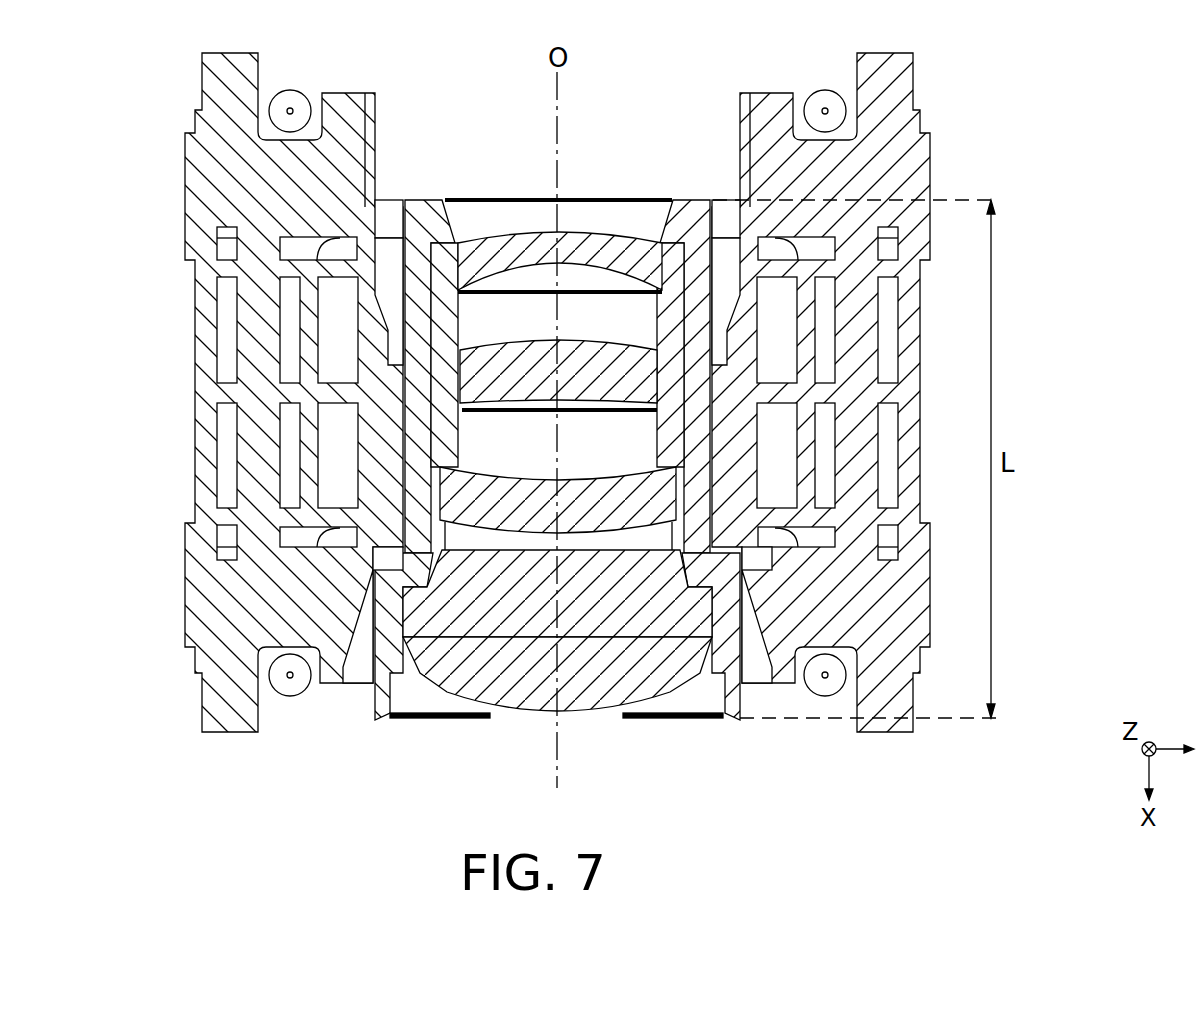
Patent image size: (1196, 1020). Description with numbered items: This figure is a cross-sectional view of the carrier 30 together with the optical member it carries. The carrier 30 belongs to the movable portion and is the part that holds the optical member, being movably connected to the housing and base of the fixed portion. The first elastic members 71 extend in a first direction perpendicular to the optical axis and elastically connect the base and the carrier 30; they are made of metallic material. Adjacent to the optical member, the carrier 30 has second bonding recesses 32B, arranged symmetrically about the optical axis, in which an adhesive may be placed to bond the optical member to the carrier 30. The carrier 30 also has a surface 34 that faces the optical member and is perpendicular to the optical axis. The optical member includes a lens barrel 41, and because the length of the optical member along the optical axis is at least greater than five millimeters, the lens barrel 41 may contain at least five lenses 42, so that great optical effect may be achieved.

The carrier 30 is at (930, 166).
The first elastic members 71 is at (292, 90).
The second bonding recesses 32B is at (400, 672).
The lens barrel 41 is at (735, 690).
The surface 34 is at (383, 553).
The lenses 42 is at (597, 703).